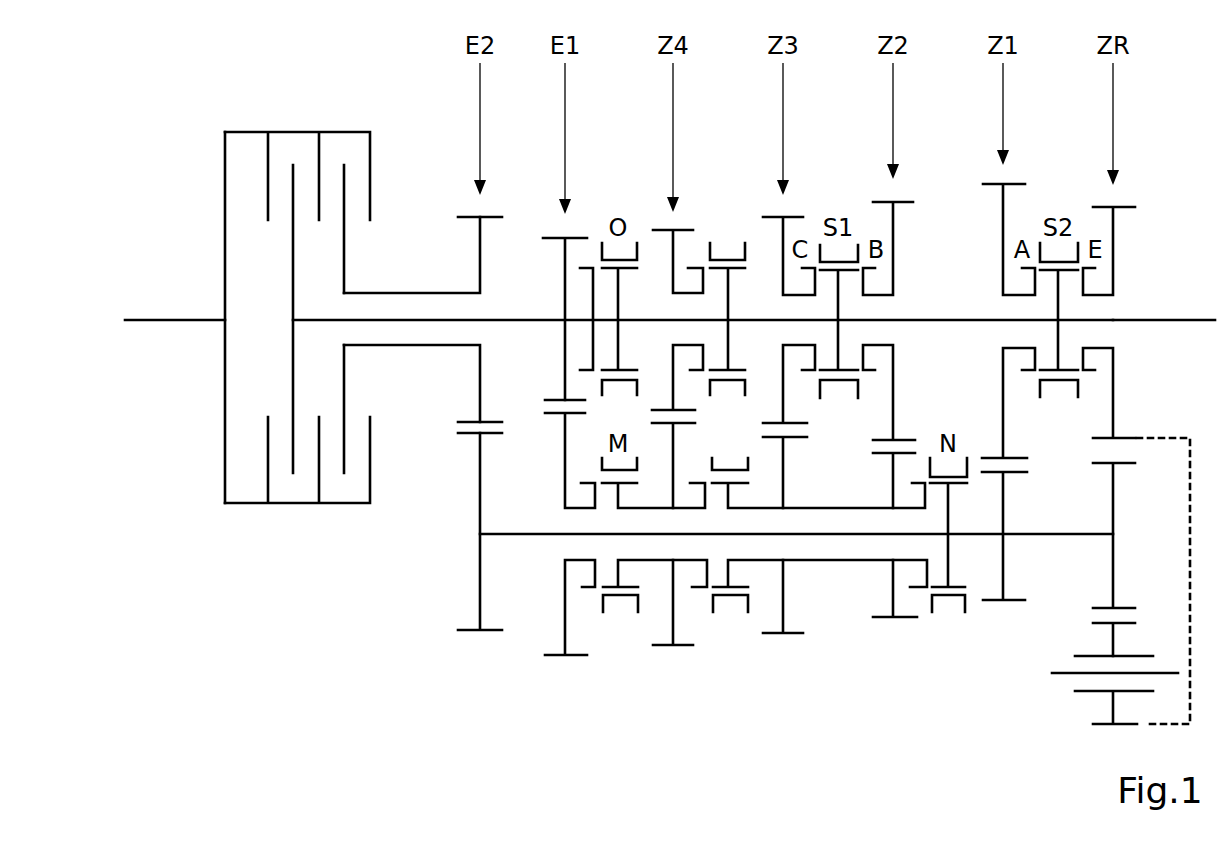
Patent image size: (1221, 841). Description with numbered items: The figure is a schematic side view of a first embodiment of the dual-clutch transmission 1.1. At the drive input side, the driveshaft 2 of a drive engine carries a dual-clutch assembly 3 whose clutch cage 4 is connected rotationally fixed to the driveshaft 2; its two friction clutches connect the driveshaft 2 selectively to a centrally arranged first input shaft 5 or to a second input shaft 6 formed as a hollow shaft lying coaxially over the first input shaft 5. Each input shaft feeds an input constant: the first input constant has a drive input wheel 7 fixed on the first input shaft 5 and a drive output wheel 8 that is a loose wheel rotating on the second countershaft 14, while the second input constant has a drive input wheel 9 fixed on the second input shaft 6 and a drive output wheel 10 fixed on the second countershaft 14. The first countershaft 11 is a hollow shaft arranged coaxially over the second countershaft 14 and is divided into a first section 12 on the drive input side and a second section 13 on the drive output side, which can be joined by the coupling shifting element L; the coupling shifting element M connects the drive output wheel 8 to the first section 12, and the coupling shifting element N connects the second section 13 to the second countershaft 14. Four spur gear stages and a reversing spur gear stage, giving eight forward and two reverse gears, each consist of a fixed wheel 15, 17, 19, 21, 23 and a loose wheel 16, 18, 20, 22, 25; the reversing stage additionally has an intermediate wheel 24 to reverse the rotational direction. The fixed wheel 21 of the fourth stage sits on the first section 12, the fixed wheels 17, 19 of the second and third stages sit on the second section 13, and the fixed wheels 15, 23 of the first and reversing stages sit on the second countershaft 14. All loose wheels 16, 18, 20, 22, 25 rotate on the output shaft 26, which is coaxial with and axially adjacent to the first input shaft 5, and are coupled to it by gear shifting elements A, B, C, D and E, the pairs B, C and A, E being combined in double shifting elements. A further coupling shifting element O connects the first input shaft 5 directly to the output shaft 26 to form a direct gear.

The dual-clutch transmission 1.1 is at (248, 630).
The driveshaft 2 is at (177, 317).
The dual-clutch assembly 3 is at (196, 396).
The clutch cage 4 is at (224, 240).
The first input shaft 5 is at (505, 316).
The second input shaft 6 is at (413, 290).
The drive input wheel 7 is at (563, 285).
The drive output wheel 8 is at (572, 600).
The drive input wheel 9 is at (480, 380).
The drive output wheel 10 is at (480, 487).
The first countershaft 11 is at (796, 631).
The first section 12 is at (660, 567).
The second section 13 is at (827, 567).
The second countershaft 14 is at (532, 540).
The fixed wheel 15 is at (997, 565).
The loose wheel 16 is at (1008, 228).
The fixed wheel 17 is at (890, 585).
The loose wheel 18 is at (895, 248).
The fixed wheel 19 is at (780, 597).
The loose wheel 20 is at (778, 258).
The fixed wheel 21 is at (678, 600).
The loose wheel 22 is at (668, 268).
The fixed wheel 23 is at (1110, 568).
The intermediate wheel 24 is at (1115, 638).
The loose wheel 25 is at (1118, 262).
The output shaft 26 is at (1170, 318).